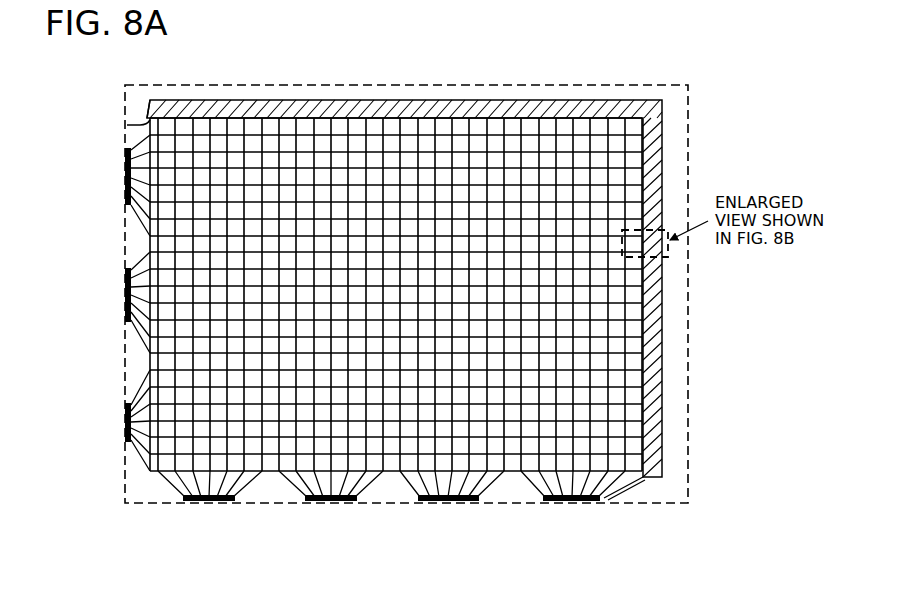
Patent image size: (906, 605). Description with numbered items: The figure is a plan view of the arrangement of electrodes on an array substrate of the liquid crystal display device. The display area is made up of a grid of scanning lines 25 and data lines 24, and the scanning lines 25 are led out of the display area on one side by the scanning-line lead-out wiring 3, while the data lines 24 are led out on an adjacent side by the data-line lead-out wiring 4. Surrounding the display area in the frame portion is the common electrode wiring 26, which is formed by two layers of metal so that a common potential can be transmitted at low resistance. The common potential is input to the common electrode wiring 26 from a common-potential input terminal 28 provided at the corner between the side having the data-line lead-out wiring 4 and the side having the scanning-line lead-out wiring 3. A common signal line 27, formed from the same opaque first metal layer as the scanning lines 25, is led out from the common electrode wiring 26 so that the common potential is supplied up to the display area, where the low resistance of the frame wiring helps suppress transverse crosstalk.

The scanning-line lead-out wiring 3 is at (126, 424).
The data-line lead-out wiring 4 is at (200, 507).
The data lines 24 is at (151, 115).
The scanning lines 25 is at (219, 117).
The common electrode wiring 26 is at (410, 110).
The common signal line 27 is at (636, 461).
The common-potential input terminal 28 is at (122, 128).